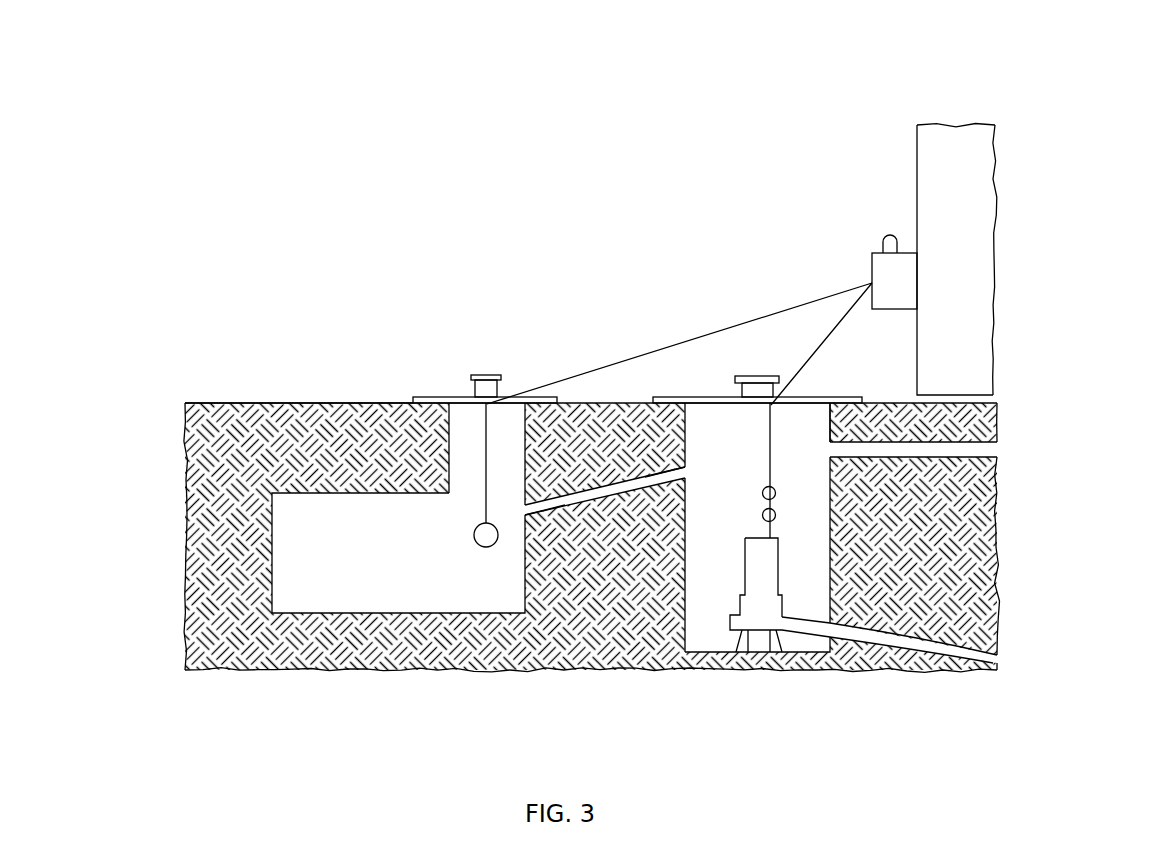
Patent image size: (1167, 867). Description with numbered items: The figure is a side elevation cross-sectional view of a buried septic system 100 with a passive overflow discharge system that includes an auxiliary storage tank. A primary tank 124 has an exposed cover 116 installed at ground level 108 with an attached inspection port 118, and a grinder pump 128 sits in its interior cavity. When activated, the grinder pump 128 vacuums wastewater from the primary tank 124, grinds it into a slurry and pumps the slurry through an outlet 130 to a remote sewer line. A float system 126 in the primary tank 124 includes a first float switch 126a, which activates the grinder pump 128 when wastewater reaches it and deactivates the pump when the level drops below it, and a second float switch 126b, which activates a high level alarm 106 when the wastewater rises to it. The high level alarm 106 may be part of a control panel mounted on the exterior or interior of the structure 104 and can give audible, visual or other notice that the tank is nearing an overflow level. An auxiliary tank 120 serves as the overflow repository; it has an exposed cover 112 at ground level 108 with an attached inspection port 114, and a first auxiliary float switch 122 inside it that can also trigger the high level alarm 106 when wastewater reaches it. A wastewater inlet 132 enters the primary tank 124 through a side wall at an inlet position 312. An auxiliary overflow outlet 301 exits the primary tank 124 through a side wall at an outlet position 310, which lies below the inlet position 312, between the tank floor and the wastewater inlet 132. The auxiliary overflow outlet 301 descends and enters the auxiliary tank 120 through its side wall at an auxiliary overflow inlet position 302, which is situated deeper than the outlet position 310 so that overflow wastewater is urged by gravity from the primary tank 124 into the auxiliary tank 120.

The septic system 100 is at (220, 442).
The structure 104 is at (963, 160).
The high level alarm 106 is at (893, 280).
The ground level 108 is at (320, 398).
The exposed cover 112 is at (427, 397).
The inspection port 114 is at (472, 375).
The exposed cover 116 is at (692, 397).
The inspection port 118 is at (750, 376).
The auxiliary tank 120 is at (295, 595).
The first auxiliary float switch 122 is at (486, 548).
The primary tank 124 is at (715, 605).
The float system 126 is at (798, 502).
The first float switch 126a is at (777, 515).
The second float switch 126b is at (777, 492).
The grinder pump 128 is at (760, 597).
The outlet 130 is at (823, 628).
The wastewater inlet 132 is at (1000, 445).
The auxiliary overflow outlet 301 is at (692, 482).
The auxiliary overflow inlet position 302 is at (523, 517).
The outlet position 310 is at (605, 495).
The inlet position 312 is at (828, 448).